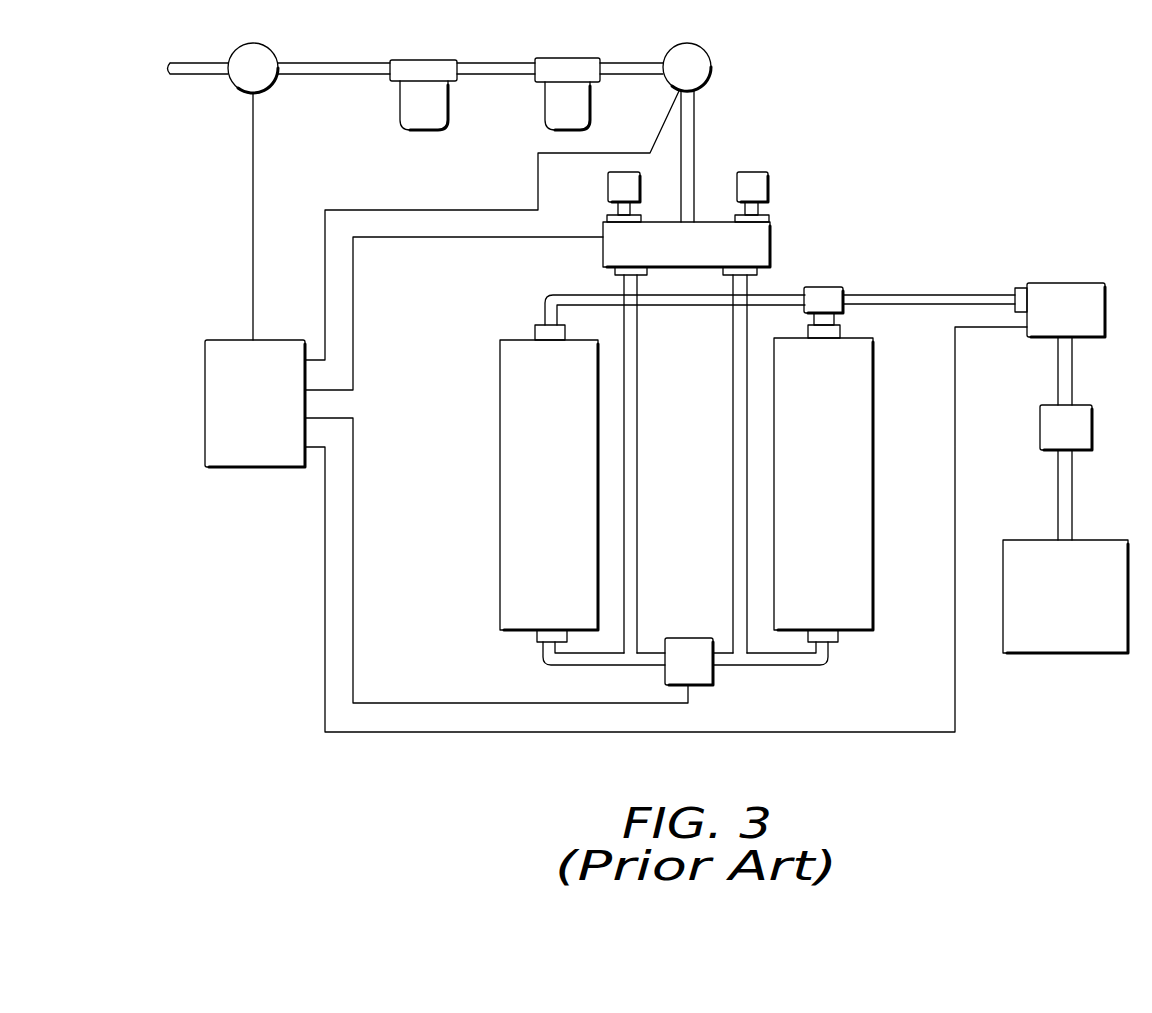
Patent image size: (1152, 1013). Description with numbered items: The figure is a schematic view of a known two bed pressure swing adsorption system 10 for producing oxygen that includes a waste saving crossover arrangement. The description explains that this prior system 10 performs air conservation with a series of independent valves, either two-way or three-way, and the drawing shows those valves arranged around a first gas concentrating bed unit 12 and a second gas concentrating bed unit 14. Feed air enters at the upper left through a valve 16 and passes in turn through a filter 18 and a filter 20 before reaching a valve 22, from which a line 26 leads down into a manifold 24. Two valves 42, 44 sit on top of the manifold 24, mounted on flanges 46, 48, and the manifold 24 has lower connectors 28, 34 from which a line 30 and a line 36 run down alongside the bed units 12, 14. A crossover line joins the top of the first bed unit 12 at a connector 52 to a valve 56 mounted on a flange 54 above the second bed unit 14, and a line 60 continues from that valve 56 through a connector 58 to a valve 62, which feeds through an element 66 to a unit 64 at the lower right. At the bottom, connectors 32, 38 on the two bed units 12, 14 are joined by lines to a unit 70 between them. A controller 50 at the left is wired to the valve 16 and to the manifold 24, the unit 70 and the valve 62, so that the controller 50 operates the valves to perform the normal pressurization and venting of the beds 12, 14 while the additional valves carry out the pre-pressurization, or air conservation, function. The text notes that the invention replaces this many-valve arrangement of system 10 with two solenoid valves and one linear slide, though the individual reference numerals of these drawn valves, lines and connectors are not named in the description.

The PSA system 10 is at (1013, 100).
The first gas concentrating bed unit 12 is at (535, 426).
The second gas concentrating bed unit 14 is at (809, 426).
The pressure control valve 16 is at (270, 47).
The filter 18 is at (400, 115).
The filter 20 is at (543, 115).
The valve 22 is at (714, 52).
The manifold 24 is at (672, 257).
The pipe 26 is at (697, 128).
The connector 28 is at (612, 272).
The pipe 30 is at (640, 440).
The connector 32 is at (533, 640).
The connector 34 is at (762, 272).
The pipe 36 is at (731, 520).
The connector 38 is at (842, 640).
The valve 42 is at (606, 188).
The valve 44 is at (760, 172).
The flange 46 is at (606, 219).
The flange 48 is at (770, 218).
The controller 50 is at (241, 416).
The connector 52 is at (533, 330).
The flange 54 is at (842, 331).
The valve 56 is at (832, 287).
The connector 58 is at (1018, 288).
The pipe 60 is at (908, 292).
The valve 62 is at (1075, 283).
The dispense unit 64 is at (1052, 610).
The sensor 66 is at (1040, 420).
The pump 70 is at (680, 638).